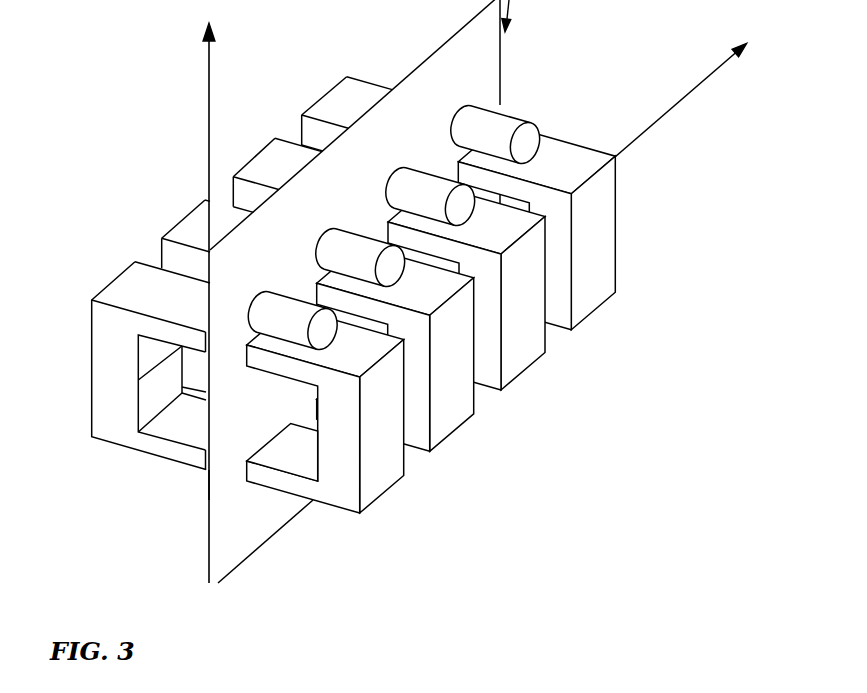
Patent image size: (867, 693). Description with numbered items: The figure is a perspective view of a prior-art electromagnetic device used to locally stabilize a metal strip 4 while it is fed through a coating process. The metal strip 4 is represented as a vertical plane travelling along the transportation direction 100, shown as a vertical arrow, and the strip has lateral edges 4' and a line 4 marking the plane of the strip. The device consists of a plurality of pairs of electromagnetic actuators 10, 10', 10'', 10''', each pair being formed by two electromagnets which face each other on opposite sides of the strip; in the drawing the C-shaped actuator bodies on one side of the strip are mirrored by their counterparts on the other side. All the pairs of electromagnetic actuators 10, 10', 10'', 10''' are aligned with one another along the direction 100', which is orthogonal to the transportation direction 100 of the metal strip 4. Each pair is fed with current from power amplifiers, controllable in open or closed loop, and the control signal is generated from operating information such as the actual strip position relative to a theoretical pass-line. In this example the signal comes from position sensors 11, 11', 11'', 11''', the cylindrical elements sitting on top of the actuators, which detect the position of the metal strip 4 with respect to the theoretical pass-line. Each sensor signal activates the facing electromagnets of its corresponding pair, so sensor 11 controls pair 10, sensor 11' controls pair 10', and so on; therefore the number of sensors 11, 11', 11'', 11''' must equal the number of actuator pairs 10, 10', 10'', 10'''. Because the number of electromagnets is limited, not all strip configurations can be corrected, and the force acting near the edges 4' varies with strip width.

The metal strip 4 is at (529, 103).
The edges of the metal strip 4' is at (160, 501).
The electromagnetic actuator pair 10 is at (353, 429).
The electromagnetic actuator pair 10' is at (420, 373).
The electromagnetic actuator pair 10'' is at (491, 314).
The electromagnetic actuator pair 10''' is at (559, 258).
The position sensor 11 is at (294, 322).
The position sensor 11' is at (362, 259).
The position sensor 11'' is at (432, 198).
The position sensor 11''' is at (515, 114).
The transportation direction 100 is at (160, 303).
The alignment direction 100' is at (681, 124).